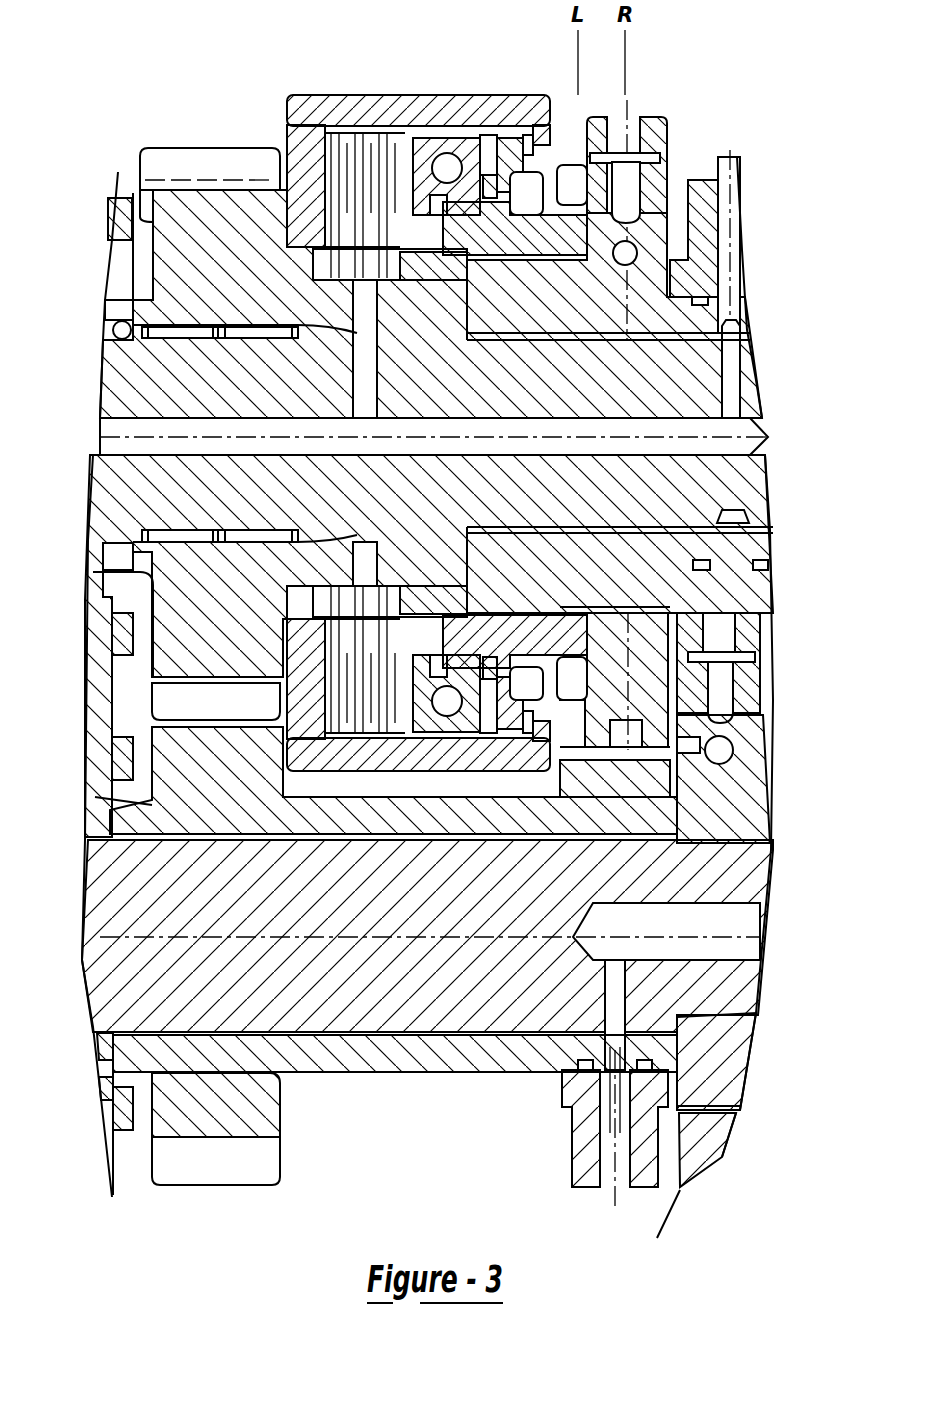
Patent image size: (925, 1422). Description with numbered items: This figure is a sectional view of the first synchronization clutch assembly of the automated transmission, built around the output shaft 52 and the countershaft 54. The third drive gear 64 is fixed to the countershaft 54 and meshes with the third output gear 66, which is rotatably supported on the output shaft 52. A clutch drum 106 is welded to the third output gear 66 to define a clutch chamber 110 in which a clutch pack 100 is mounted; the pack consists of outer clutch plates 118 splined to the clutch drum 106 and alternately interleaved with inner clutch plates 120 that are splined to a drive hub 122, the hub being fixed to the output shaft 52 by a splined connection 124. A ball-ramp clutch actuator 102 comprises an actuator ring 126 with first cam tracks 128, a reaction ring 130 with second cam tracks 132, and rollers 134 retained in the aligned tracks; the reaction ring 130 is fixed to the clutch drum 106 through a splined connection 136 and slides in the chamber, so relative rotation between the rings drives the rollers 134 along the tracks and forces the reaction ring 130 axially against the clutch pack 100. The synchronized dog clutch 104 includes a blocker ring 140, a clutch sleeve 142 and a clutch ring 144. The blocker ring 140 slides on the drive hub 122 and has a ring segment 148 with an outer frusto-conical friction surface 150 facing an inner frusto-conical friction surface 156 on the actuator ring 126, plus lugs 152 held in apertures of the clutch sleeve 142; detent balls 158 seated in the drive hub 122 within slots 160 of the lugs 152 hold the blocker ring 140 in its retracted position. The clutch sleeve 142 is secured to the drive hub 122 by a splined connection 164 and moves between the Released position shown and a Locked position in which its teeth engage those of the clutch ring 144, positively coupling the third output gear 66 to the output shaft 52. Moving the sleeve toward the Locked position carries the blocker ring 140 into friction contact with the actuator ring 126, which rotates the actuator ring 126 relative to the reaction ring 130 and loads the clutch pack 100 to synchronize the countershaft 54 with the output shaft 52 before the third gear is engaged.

The output shaft 52 is at (750, 384).
The countershaft 54 is at (105, 882).
The third drive gear 64 is at (195, 1180).
The third output gear 66 is at (165, 162).
The clutch pack 100 is at (386, 201).
The ball-ramp clutch actuator 102 is at (490, 142).
The synchronized dog clutch 104 is at (683, 125).
The clutch drum 106 is at (337, 115).
The clutch chamber 110 is at (443, 692).
The outer clutch plates 118 is at (368, 737).
The inner clutch plates 120 is at (370, 602).
The drive hub 122 is at (578, 311).
The splined connection 124 is at (565, 340).
The actuator ring 126 is at (455, 745).
The first cam tracks 128 is at (447, 716).
The reaction ring 130 is at (420, 157).
The second cam tracks 132 is at (445, 158).
The rollers 134 is at (470, 140).
The splined connection 136 is at (423, 737).
The blocker ring 140 is at (493, 243).
The clutch sleeve 142 is at (665, 130).
The clutch ring 144 is at (527, 132).
The ring segment 148 is at (500, 600).
The outer frusto-conical friction surface 150 is at (478, 668).
The lugs 152 is at (583, 247).
The inner frusto-conical friction surface 156 is at (512, 187).
The detent balls 158 is at (645, 242).
The slots 160 is at (670, 258).
The splined connection 164 is at (622, 605).